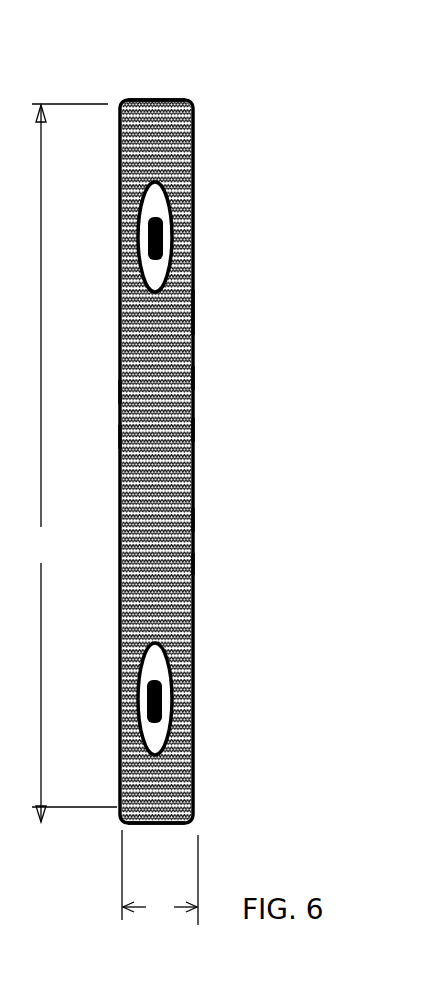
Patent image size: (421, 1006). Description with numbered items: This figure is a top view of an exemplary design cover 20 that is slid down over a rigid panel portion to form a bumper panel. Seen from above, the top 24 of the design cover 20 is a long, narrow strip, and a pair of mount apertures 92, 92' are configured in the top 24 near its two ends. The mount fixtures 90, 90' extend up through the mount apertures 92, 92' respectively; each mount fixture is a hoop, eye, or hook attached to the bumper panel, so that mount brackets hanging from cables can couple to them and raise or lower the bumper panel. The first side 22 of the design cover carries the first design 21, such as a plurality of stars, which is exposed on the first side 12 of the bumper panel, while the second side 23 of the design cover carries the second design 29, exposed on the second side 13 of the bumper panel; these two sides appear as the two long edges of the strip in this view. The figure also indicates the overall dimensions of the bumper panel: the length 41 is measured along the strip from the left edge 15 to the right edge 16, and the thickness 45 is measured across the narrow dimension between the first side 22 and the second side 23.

The first side of the bumper panel 12 is at (120, 632).
The second side of the bumper panel 13 is at (193, 563).
The left edge 15 is at (162, 98).
The right edge 16 is at (170, 823).
The design cover 20 is at (193, 520).
The first design 21 is at (120, 392).
The first side of the design cover 22 is at (120, 437).
The second side of the design cover 23 is at (193, 430).
The top of the design cover 24 is at (180, 323).
The second design 29 is at (193, 378).
The length of the bumper panel 41 is at (74, 463).
The thickness of the bumper panel 45 is at (160, 877).
The mount fixture 90 is at (202, 231).
The second mount fixture 90' is at (204, 701).
The mount aperture 92 is at (199, 227).
The second mount aperture 92' is at (199, 693).